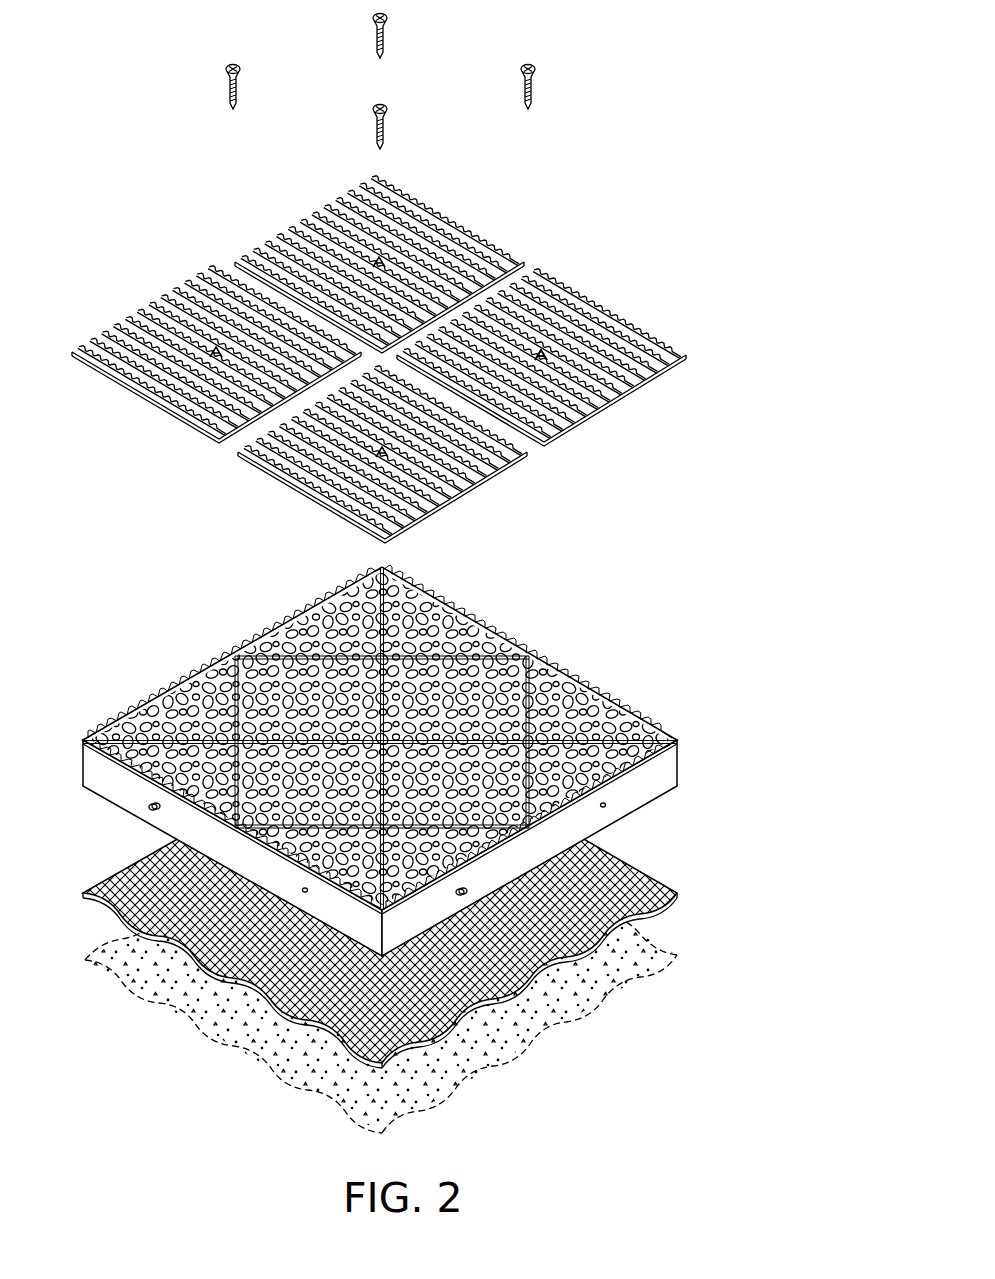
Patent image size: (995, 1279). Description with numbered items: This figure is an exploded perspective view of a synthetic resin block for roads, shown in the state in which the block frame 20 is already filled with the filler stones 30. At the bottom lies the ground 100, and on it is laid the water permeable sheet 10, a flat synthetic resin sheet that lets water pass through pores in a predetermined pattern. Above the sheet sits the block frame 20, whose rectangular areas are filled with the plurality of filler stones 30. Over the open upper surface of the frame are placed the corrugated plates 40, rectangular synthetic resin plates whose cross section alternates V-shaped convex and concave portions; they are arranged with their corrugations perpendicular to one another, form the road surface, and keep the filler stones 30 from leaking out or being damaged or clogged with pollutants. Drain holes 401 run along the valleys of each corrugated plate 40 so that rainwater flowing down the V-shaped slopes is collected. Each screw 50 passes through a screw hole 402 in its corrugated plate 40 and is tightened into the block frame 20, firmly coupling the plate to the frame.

The water permeable sheet 10 is at (675, 887).
The block frame 20 is at (411, 760).
The filler stones 30 is at (583, 698).
The corrugated plates 40 is at (397, 359).
The drain holes 401 is at (676, 353).
The screw hole 402 is at (548, 350).
The screws 50 is at (535, 85).
The ground 100 is at (663, 972).